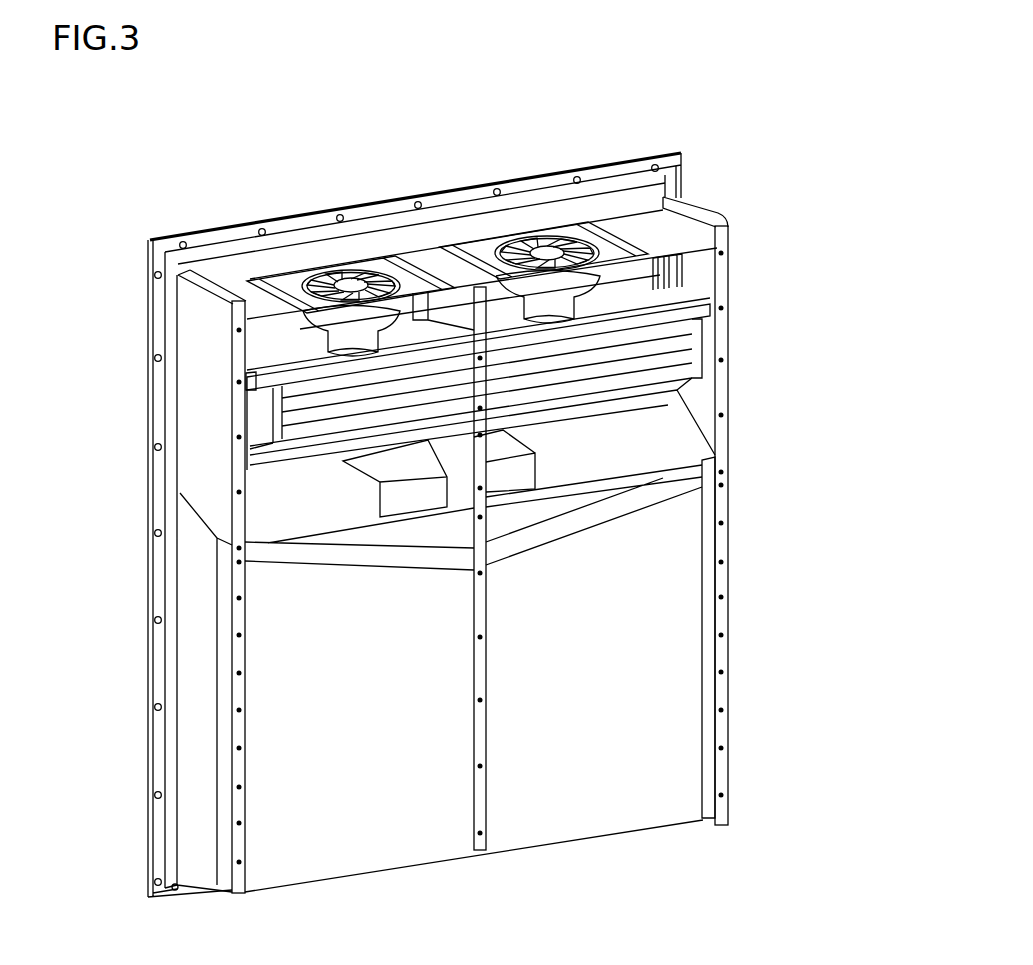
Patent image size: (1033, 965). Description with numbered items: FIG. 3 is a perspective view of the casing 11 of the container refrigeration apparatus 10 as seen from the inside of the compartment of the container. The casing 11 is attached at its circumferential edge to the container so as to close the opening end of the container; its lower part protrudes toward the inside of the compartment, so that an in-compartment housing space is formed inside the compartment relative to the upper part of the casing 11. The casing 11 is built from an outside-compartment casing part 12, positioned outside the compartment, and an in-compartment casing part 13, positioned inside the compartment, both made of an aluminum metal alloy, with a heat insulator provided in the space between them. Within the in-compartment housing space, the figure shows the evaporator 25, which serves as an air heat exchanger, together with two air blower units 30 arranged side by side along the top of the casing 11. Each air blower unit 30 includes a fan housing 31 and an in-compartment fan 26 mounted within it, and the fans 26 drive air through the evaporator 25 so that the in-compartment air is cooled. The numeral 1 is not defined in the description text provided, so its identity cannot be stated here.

The fan unit 1 is at (600, 302).
The container refrigeration apparatus 10 is at (724, 137).
The casing 11 is at (150, 240).
The outside-compartment casing part 12 is at (667, 153).
The in-compartment casing part 13 is at (673, 607).
The evaporator 25 is at (687, 358).
The in-compartment fan 26 is at (353, 280).
The air blower unit 30 is at (688, 321).
The fan housing 31 is at (655, 279).